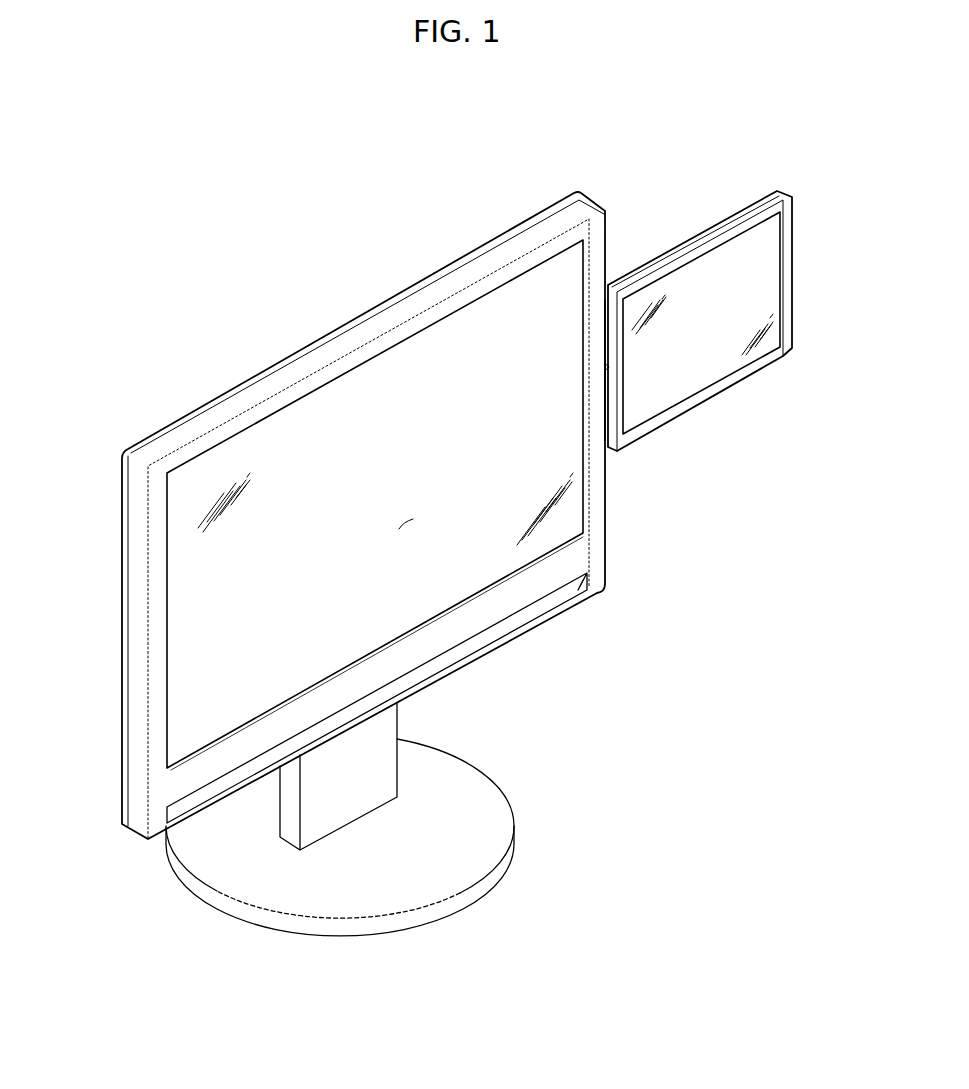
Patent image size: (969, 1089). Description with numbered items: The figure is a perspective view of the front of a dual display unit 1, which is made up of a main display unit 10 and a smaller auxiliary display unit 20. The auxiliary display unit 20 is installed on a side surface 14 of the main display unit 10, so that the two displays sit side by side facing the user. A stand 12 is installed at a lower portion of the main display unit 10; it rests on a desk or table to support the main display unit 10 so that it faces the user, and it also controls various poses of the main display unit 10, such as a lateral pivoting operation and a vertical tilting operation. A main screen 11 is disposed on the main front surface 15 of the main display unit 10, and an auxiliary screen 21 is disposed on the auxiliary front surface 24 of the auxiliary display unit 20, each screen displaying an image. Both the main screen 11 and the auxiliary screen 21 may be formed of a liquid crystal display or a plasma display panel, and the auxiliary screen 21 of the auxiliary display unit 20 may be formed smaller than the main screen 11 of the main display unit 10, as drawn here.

The dual display unit 1 is at (691, 667).
The main display unit 10 is at (350, 292).
The main screen 11 is at (186, 623).
The stand 12 is at (497, 803).
The side surface 14 is at (607, 492).
The main front surface 15 is at (167, 781).
The auxiliary display unit 20 is at (694, 212).
The auxiliary screen 21 is at (757, 280).
The auxiliary front surface 24 is at (793, 297).